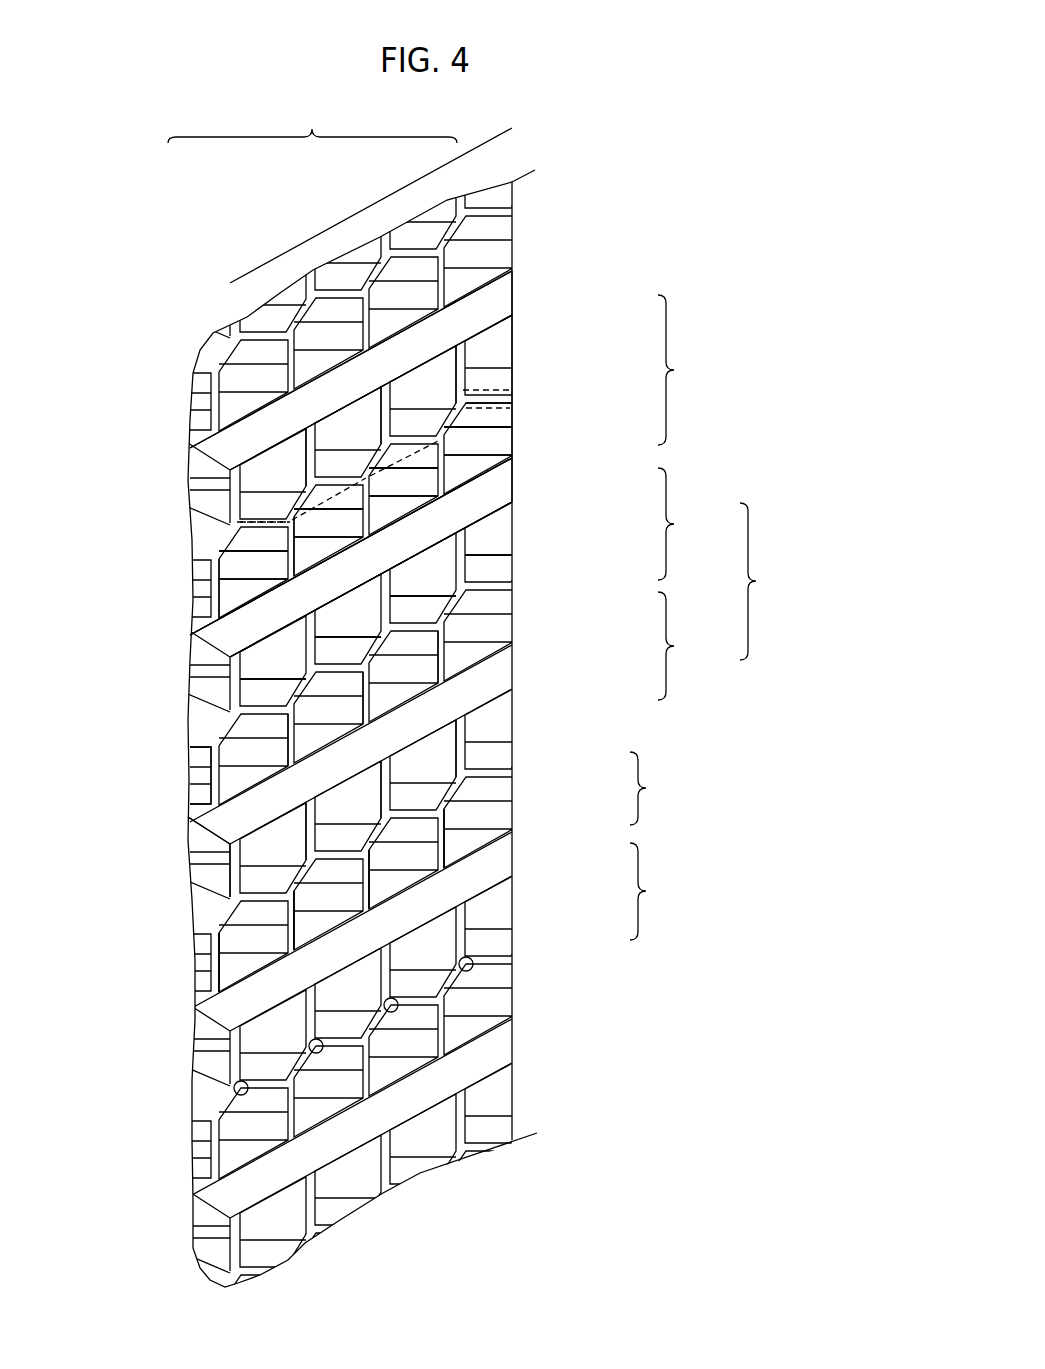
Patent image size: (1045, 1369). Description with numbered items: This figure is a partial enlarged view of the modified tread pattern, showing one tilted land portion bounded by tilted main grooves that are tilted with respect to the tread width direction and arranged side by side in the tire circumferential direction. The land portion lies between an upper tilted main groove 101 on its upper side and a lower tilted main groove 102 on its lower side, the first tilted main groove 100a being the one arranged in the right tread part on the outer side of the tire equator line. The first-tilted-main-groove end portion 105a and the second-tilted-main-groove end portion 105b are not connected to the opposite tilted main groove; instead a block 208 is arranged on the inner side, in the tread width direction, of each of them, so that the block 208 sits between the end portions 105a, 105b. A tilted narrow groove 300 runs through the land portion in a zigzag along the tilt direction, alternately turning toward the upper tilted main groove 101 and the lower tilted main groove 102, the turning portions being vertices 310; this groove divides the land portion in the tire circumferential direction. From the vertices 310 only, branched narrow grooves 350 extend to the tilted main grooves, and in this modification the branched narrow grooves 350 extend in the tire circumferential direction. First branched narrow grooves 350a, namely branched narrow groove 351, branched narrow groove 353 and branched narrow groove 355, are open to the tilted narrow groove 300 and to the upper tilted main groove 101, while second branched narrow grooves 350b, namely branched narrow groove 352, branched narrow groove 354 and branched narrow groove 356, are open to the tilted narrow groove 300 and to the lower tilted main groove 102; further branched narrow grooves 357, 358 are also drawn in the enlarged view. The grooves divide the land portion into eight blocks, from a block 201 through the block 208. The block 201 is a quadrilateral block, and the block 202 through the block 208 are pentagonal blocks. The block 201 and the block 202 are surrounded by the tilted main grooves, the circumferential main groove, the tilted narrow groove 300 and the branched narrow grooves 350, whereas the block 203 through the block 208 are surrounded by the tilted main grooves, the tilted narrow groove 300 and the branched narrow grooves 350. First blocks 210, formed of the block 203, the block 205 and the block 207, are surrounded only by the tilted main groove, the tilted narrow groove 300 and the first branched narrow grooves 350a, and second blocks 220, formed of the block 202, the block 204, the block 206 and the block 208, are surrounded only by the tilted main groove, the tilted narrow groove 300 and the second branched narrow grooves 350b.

The first tilted main groove 100a is at (620, 386).
The upper tilted main groove 101 is at (520, 295).
The lower tilted main groove 102 is at (520, 470).
The first-tilted-main-groove end portion 105a is at (210, 813).
The second-tilted-main-groove end portion 105b is at (210, 902).
The block 201 is at (492, 333).
The block 202 is at (505, 398).
The block 203 is at (427, 370).
The block 204 is at (505, 415).
The block 205 is at (350, 413).
The block 206 is at (298, 556).
The block 207 is at (277, 443).
The block 208 is at (225, 597).
The first blocks 210 is at (496, 790).
The second blocks 220 is at (452, 900).
The tilted narrow groove 300 is at (290, 534).
The vertices 310 is at (442, 1017).
The branched narrow groove 350 is at (509, 525).
The first branched narrow grooves 350a is at (485, 387).
The second branched narrow grooves 350b is at (474, 489).
The branched narrow groove 351 is at (455, 333).
The branched narrow groove 352 is at (446, 503).
The branched narrow groove 353 is at (380, 380).
The branched narrow groove 354 is at (371, 547).
The branched narrow groove 355 is at (305, 423).
The branched narrow groove 356 is at (295, 587).
The sipe 357 is at (230, 455).
The sipe 358 is at (220, 625).